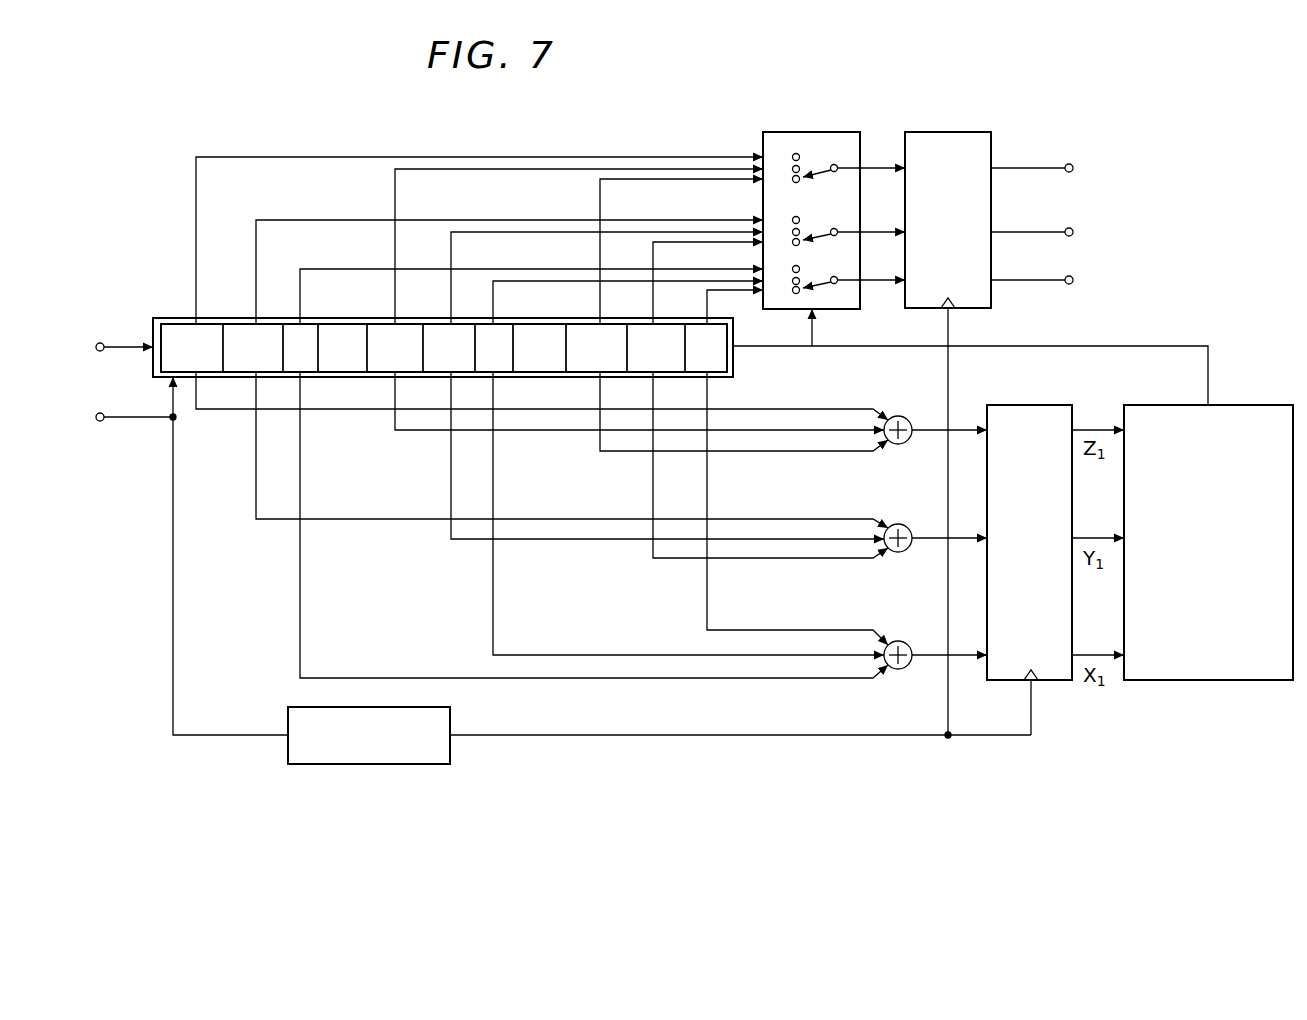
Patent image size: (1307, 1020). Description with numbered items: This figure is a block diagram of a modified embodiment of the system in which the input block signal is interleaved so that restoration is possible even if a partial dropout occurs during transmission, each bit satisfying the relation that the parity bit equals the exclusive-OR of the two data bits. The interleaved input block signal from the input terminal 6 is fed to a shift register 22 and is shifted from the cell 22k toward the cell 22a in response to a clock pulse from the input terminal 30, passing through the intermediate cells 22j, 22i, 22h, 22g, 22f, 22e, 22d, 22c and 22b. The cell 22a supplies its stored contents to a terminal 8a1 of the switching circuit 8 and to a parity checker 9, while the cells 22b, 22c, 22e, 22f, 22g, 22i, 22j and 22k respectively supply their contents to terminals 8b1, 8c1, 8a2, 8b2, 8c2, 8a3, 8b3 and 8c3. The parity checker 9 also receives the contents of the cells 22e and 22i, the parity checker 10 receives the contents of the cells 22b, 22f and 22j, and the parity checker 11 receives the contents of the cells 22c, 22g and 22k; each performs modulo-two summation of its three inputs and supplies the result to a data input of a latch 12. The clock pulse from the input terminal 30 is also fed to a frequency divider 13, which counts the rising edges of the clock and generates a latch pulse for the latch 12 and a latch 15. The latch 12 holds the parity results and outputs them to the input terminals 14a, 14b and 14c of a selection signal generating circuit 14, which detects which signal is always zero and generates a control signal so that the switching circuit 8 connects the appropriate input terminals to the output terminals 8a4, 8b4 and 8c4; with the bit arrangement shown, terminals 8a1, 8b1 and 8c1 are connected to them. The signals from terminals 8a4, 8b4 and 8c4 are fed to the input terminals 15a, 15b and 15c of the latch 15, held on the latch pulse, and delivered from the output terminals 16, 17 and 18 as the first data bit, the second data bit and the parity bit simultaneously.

The input terminal 6 is at (101, 343).
The input terminal 30 is at (102, 413).
The shift register 22 is at (735, 362).
The cell 22a is at (735, 333).
The cell 22b is at (670, 322).
The cell 22c is at (615, 322).
The cell 22d is at (550, 322).
The cell 22e is at (505, 322).
The cell 22f is at (460, 322).
The cell 22g is at (407, 322).
The cell 22h is at (350, 322).
The cell 22i is at (308, 322).
The cell 22j is at (238, 322).
The cell 22k is at (165, 322).
The switching circuit 8 is at (824, 132).
The terminal 8a1 is at (798, 294).
The terminal 8a2 is at (796, 285).
The terminal 8a3 is at (793, 268).
The terminal 8a4 is at (835, 284).
The terminal 8b1 is at (793, 240).
The terminal 8b2 is at (799, 231).
The terminal 8b3 is at (793, 220).
The terminal 8b4 is at (835, 236).
The terminal 8c1 is at (793, 177).
The terminal 8c2 is at (799, 168).
The terminal 8c3 is at (794, 155).
The terminal 8c4 is at (835, 172).
The latch 15 is at (961, 132).
The input terminal 15a is at (893, 282).
The input terminal 15b is at (893, 234).
The input terminal 15c is at (892, 169).
The output terminal 16 is at (1073, 278).
The output terminal 17 is at (1072, 228).
The output terminal 18 is at (1072, 165).
The parity checker 9 is at (904, 642).
The parity checker 10 is at (906, 526).
The parity checker 11 is at (906, 418).
The latch 12 is at (1040, 405).
The frequency divider 13 is at (452, 716).
The selection signal generating circuit 14 is at (1250, 405).
The input terminal 14a is at (1120, 655).
The input terminal 14b is at (1120, 538).
The input terminal 14c is at (1119, 431).